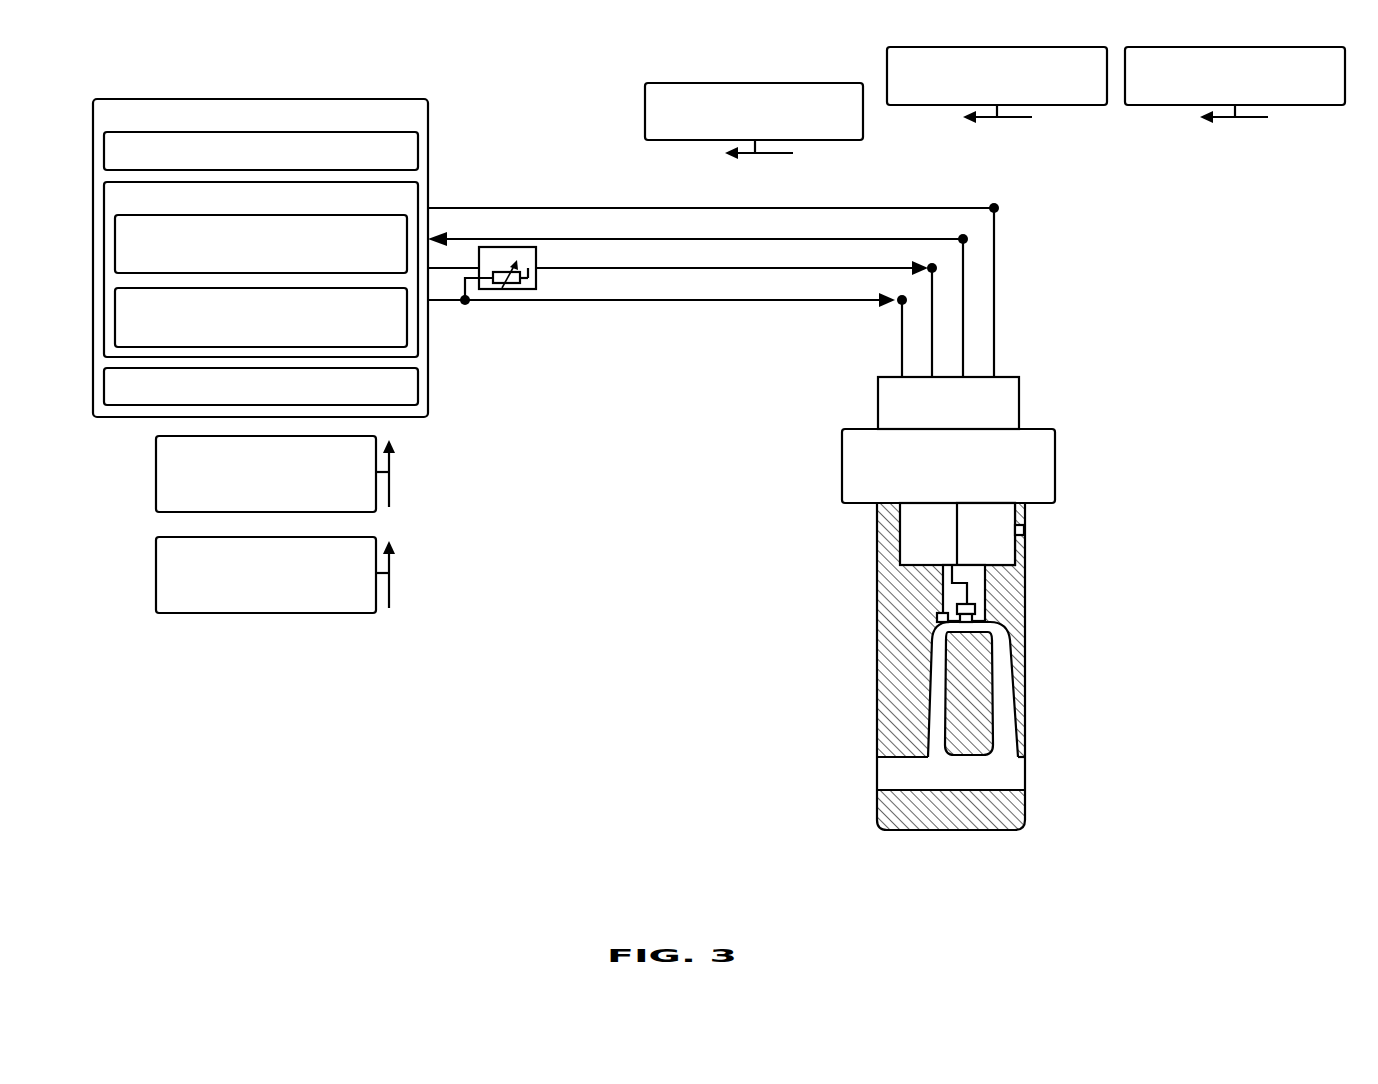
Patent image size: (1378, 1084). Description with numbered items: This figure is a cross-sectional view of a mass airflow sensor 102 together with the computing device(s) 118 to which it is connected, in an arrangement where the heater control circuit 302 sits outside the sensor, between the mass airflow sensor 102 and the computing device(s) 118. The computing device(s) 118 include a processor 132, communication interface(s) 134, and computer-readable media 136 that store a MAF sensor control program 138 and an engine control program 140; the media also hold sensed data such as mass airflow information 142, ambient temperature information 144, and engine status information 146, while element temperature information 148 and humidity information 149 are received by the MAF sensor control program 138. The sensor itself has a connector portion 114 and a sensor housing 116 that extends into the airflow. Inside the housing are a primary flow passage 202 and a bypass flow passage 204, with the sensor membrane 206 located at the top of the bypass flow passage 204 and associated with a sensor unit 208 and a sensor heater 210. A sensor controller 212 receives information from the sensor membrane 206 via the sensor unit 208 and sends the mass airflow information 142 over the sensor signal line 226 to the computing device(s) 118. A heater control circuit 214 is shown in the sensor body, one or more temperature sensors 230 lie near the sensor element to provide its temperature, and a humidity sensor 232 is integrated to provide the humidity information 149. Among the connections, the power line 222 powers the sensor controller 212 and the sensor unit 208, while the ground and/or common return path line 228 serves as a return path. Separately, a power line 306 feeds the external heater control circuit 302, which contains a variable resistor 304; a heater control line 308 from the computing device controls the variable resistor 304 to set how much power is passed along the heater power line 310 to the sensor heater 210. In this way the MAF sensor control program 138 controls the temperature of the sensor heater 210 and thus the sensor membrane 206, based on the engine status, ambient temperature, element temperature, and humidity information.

The mass airflow sensor 102 is at (1072, 362).
The connector portion 114 is at (878, 377).
The sensor housing 116 is at (1025, 826).
The computing device(s) 118 is at (375, 125).
The processor 132 is at (343, 160).
The communication interface(s) 134 is at (375, 396).
The computer-readable media 136 is at (403, 208).
The MAF sensor control program 138 is at (322, 266).
The engine control program 140 is at (277, 340).
The mass airflow information 142 is at (832, 133).
The ambient temperature information 144 is at (342, 598).
The engine status information 146 is at (342, 498).
The element temperature information 148 is at (1072, 101).
The humidity information 149 is at (1250, 101).
The primary flow passage 202 is at (877, 779).
The bypass flow passage 204 is at (918, 693).
The sensor membrane 206 is at (985, 622).
The sensor unit 208 is at (1088, 617).
The sensor heater 210 is at (976, 611).
The sensor controller 212 is at (1025, 553).
The heater control circuit 214 is at (900, 565).
The power line 222 is at (705, 300).
The sensor signal line 226 is at (963, 239).
The ground and/or common return path line 228 is at (945, 208).
The temperature sensor(s) 230 is at (938, 616).
The humidity sensor 232 is at (1027, 530).
The heater control circuit 302 is at (536, 247).
The variable resistor 304 is at (515, 288).
The power line 306 is at (472, 281).
The heater control line 308 is at (453, 268).
The heater power line 310 is at (828, 268).